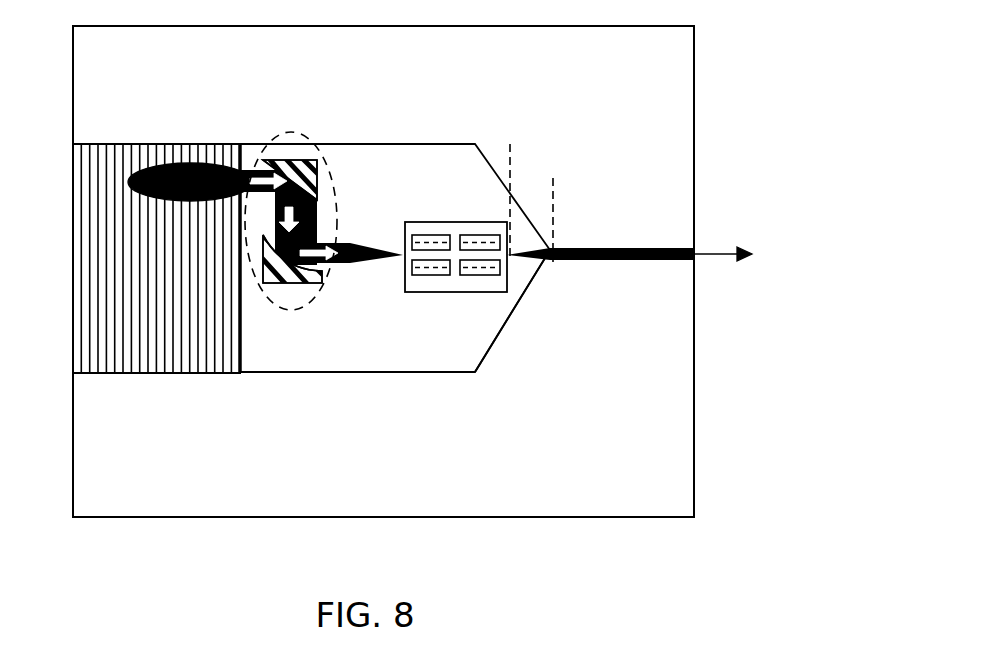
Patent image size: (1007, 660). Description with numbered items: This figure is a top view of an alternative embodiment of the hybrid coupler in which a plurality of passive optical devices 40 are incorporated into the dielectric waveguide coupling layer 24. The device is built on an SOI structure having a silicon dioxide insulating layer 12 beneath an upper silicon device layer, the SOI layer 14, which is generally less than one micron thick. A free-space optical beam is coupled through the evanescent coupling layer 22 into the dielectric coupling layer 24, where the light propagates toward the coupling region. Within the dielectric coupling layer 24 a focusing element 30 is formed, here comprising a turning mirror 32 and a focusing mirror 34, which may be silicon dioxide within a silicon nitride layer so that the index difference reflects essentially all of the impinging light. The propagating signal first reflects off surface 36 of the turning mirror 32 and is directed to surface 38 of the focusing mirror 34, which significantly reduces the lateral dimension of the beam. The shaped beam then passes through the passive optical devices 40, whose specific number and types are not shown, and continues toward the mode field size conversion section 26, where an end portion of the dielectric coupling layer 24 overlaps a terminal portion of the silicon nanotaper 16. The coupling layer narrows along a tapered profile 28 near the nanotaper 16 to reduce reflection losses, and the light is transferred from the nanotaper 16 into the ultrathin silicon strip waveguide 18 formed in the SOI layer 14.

The silicon dioxide insulating layer 12 is at (665, 412).
The SOI layer 14 is at (694, 262).
The silicon nanotaper 16 is at (548, 252).
The ultrathin silicon strip waveguide 18 is at (606, 250).
The evanescent coupling layer 22 is at (95, 187).
The dielectric waveguide coupling layer 24 is at (420, 337).
The mode field size conversion section 26 is at (538, 178).
The tapered profile 28 is at (488, 350).
The focusing element 30 is at (272, 140).
The turning mirror 32 is at (313, 123).
The focusing mirror 34 is at (272, 348).
The surface of turning mirror 36 is at (277, 162).
The surface of focusing mirror 38 is at (279, 287).
The passive optical devices 40 is at (433, 222).